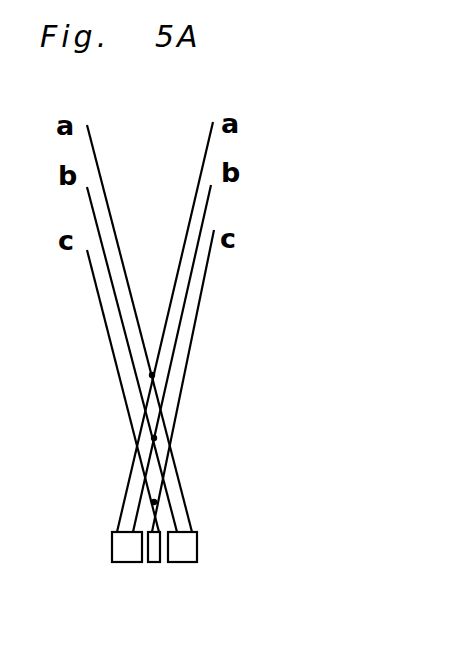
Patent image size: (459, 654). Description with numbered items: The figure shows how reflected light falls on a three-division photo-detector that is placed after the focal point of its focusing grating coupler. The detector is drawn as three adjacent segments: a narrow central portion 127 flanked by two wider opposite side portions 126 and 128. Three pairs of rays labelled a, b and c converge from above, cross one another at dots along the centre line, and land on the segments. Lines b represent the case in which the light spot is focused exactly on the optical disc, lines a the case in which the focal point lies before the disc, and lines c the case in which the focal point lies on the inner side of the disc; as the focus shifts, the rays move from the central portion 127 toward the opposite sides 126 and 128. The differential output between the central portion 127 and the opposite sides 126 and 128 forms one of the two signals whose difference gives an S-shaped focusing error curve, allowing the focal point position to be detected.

The opposite side portion of three-division photo-detector 126 is at (120, 550).
The central portion of three-division photo-detector 127 is at (157, 553).
The opposite side portion of three-division photo-detector 128 is at (190, 550).